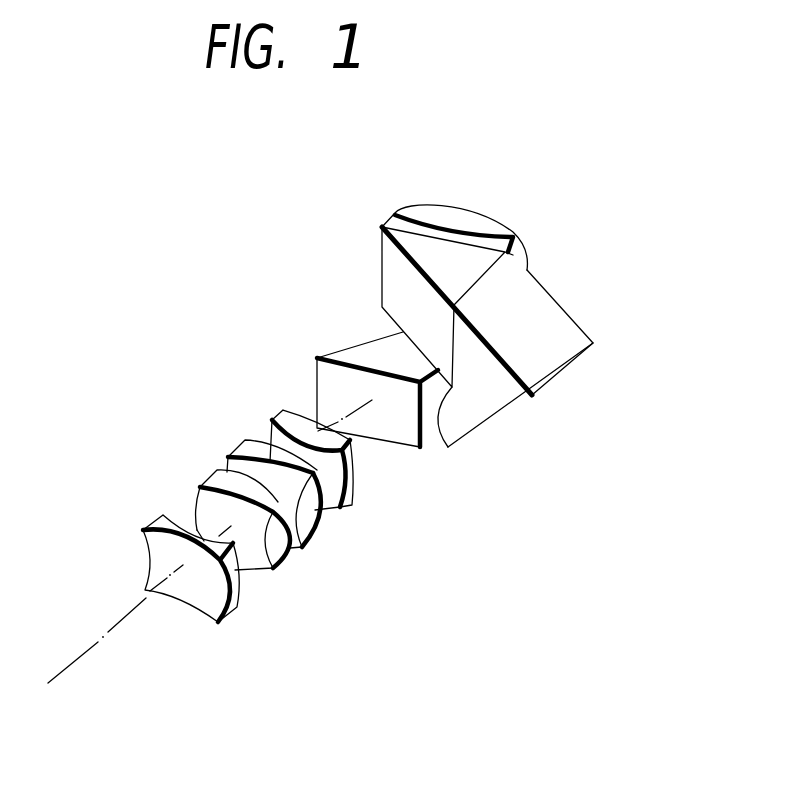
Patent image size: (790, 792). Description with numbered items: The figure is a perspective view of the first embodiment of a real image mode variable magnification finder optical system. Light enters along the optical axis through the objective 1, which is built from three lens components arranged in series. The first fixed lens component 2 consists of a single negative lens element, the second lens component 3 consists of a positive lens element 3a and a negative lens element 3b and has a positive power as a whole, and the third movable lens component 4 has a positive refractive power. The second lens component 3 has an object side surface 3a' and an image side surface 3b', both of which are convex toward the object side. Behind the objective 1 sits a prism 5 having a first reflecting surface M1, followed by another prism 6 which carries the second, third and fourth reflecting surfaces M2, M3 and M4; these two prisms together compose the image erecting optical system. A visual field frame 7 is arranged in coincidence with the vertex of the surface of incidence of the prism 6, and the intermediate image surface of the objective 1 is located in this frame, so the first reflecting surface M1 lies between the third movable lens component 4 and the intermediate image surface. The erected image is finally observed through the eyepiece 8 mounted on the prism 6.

The objective 1 is at (251, 360).
The first fixed lens component 2 is at (232, 607).
The second lens component 3 is at (404, 583).
The positive lens element 3a is at (245, 540).
The object side surface 3a' is at (178, 484).
The negative lens element 3b is at (306, 490).
The image side surface 3b' is at (270, 425).
The third movable lens component 4 is at (352, 505).
The prism 5 is at (400, 427).
The prism 6 is at (563, 335).
The visual field frame 7 is at (438, 414).
The eyepiece 8 is at (472, 218).
The first reflecting surface M1 is at (350, 348).
The second reflecting surface M2 is at (515, 408).
The third reflecting surface M3 is at (538, 303).
The fourth reflecting surface M4 is at (393, 270).